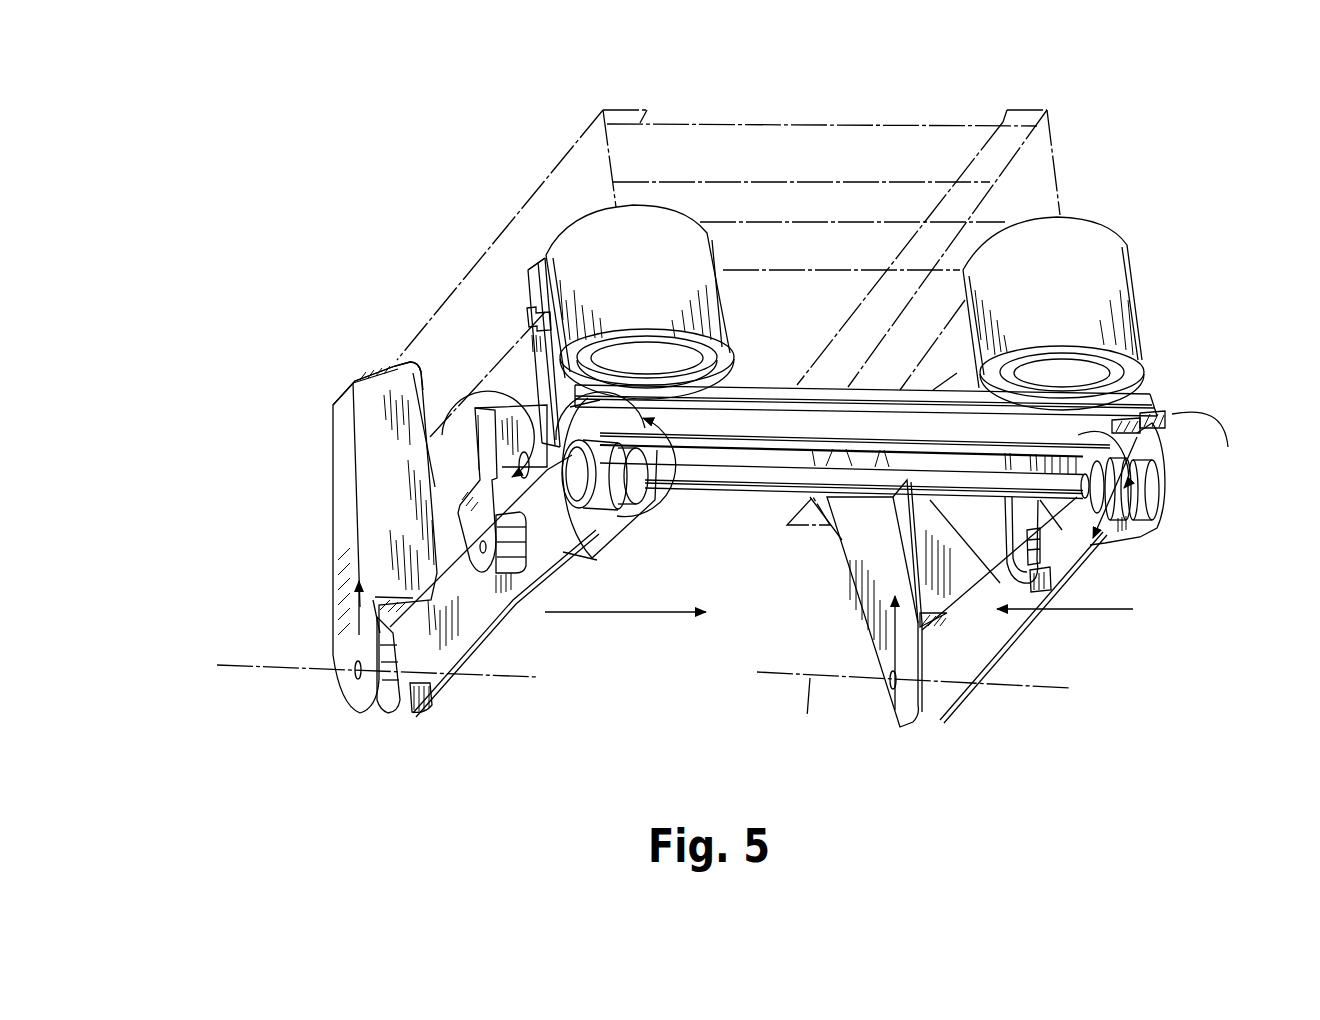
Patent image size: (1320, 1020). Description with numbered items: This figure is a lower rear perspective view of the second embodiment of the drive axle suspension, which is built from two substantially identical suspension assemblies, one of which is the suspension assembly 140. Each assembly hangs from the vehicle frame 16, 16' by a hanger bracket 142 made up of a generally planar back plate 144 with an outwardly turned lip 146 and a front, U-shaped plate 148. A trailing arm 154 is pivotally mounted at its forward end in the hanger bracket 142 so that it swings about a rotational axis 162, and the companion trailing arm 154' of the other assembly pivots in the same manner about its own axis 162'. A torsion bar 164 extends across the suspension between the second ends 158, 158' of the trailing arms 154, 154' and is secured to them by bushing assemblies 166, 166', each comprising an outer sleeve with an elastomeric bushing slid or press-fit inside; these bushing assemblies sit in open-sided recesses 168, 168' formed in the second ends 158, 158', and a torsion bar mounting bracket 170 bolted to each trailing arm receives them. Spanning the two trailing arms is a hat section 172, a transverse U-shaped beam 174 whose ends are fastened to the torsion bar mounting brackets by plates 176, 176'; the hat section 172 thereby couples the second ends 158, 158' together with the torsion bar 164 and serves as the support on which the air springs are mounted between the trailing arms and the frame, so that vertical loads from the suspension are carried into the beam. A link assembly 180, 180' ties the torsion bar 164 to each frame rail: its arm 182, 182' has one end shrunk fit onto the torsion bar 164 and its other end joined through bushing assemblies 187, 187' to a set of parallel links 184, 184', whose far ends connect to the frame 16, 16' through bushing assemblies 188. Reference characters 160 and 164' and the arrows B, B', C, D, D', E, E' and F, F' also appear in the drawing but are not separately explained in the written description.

The frame 16 is at (717, 305).
The frame 16' is at (928, 219).
The suspension assembly 140 is at (284, 360).
The hanger bracket 142 is at (385, 352).
The back plate 144 is at (400, 360).
The outwardly turned lip 146 is at (360, 373).
The front U-shaped plate 148 is at (347, 515).
The trailing arm 154 is at (494, 611).
The trailing arm 154' is at (1039, 610).
The second end 158 is at (589, 535).
The second end 158' is at (1193, 507).
The roller 160 is at (387, 710).
The rotational axis 162 is at (370, 630).
The axis 162' is at (913, 712).
The torsion bar 164 is at (844, 520).
The shaft end 164' is at (1211, 503).
The bushing assembly 166 is at (635, 498).
The bushing assembly 166' is at (1142, 550).
The open-sided recess 168 is at (565, 558).
The open-sided recess 168' is at (1180, 532).
The torsion bar mounting bracket 170 is at (650, 413).
The hat section 172 is at (1160, 402).
The transverse U-shaped beam 174 is at (1135, 395).
The plate 176 is at (665, 302).
The plate 176' is at (1202, 449).
The link assembly 180 is at (551, 453).
The link assembly 180' is at (1000, 693).
The arm 182 is at (610, 612).
The arm 182' is at (1092, 624).
The parallel links 184 is at (495, 262).
The parallel links 184' is at (995, 544).
The bushing assembly 187 is at (580, 632).
The bushing assembly 187' is at (1043, 668).
The bushing assembly 188 is at (530, 275).
The direction arrow B is at (335, 611).
The direction arrow B' is at (880, 603).
The rotation arrow C is at (494, 482).
The rotation arrow D is at (657, 471).
The rotation arrow D' is at (1110, 506).
The rotation arrow E is at (600, 371).
The rotation arrow E' is at (1210, 423).
The direction arrow F is at (625, 633).
The direction arrow F' is at (1065, 630).